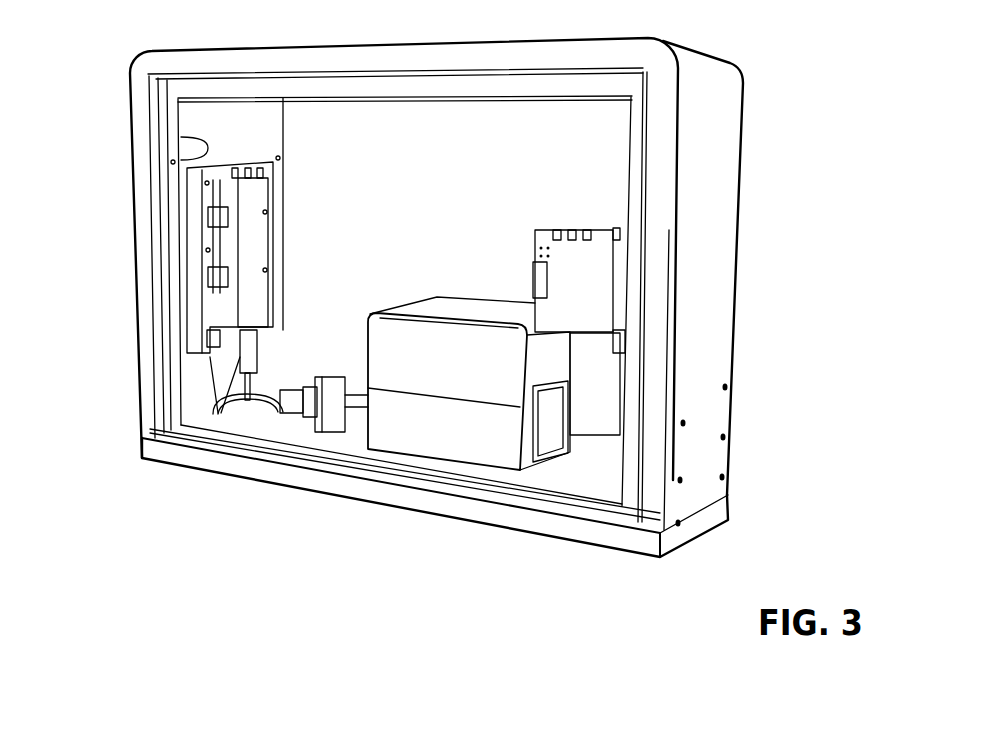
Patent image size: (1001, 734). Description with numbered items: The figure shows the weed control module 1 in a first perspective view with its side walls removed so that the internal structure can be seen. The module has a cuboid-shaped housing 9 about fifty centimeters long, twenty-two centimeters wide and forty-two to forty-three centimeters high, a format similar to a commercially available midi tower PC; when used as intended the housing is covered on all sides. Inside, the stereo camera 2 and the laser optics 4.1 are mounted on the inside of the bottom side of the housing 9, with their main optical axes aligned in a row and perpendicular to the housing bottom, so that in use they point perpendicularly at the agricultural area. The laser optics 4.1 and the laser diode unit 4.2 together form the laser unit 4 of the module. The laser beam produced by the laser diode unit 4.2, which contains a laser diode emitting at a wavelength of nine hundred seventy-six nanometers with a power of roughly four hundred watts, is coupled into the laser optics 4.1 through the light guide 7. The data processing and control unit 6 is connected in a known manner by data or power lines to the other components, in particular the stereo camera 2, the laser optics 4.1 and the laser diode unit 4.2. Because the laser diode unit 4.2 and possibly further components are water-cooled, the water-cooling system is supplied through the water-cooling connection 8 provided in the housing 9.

The weed control module 1 is at (768, 115).
The stereo camera 2 is at (283, 432).
The laser unit 4 is at (378, 316).
The laser optics 4.1 is at (493, 348).
The laser diode unit 4.2 is at (262, 245).
The data processing and control unit 6 is at (600, 250).
The light guide 7 is at (258, 382).
The water-cooling connection 8 is at (190, 127).
The housing 9 is at (660, 240).